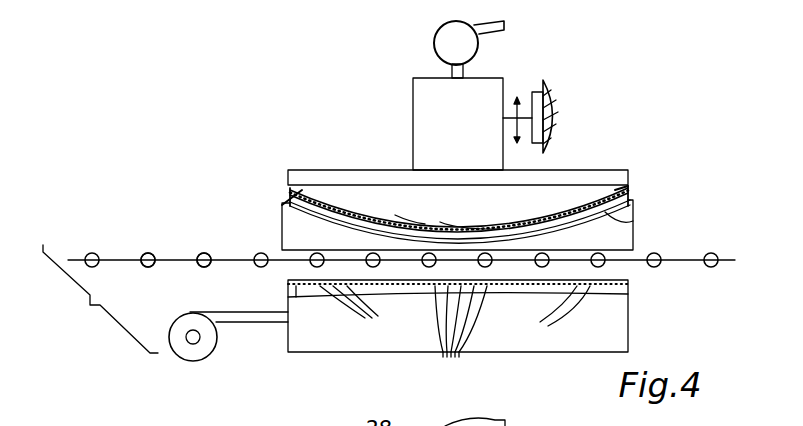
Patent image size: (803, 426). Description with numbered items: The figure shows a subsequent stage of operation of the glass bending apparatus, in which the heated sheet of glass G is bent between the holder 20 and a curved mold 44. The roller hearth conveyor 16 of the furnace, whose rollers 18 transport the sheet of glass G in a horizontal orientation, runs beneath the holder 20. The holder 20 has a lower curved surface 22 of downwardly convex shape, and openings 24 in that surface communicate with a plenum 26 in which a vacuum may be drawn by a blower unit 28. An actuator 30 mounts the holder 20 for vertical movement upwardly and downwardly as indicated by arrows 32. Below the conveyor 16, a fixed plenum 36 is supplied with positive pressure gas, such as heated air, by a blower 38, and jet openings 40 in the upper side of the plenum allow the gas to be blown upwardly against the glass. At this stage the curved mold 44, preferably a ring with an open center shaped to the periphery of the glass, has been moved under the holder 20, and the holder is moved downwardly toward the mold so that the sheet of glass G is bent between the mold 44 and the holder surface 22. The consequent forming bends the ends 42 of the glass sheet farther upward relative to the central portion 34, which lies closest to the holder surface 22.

The roller hearth conveyor 16 is at (92, 252).
The rollers 18 is at (204, 252).
The holder 20 is at (413, 107).
The lower curved surface 22 is at (287, 220).
The openings 24 is at (332, 207).
The plenum 26 is at (540, 198).
The blower unit 28 is at (448, 35).
The actuator 30 is at (545, 100).
The arrows 32 is at (520, 96).
The central portion 34 is at (477, 228).
The fixed plenum 36 is at (610, 327).
The blower 38 is at (197, 350).
The jet openings 40 is at (455, 335).
The glass sheet ends 42 is at (290, 193).
The curved mold 44 is at (633, 221).
The sheet of glass G is at (410, 226).